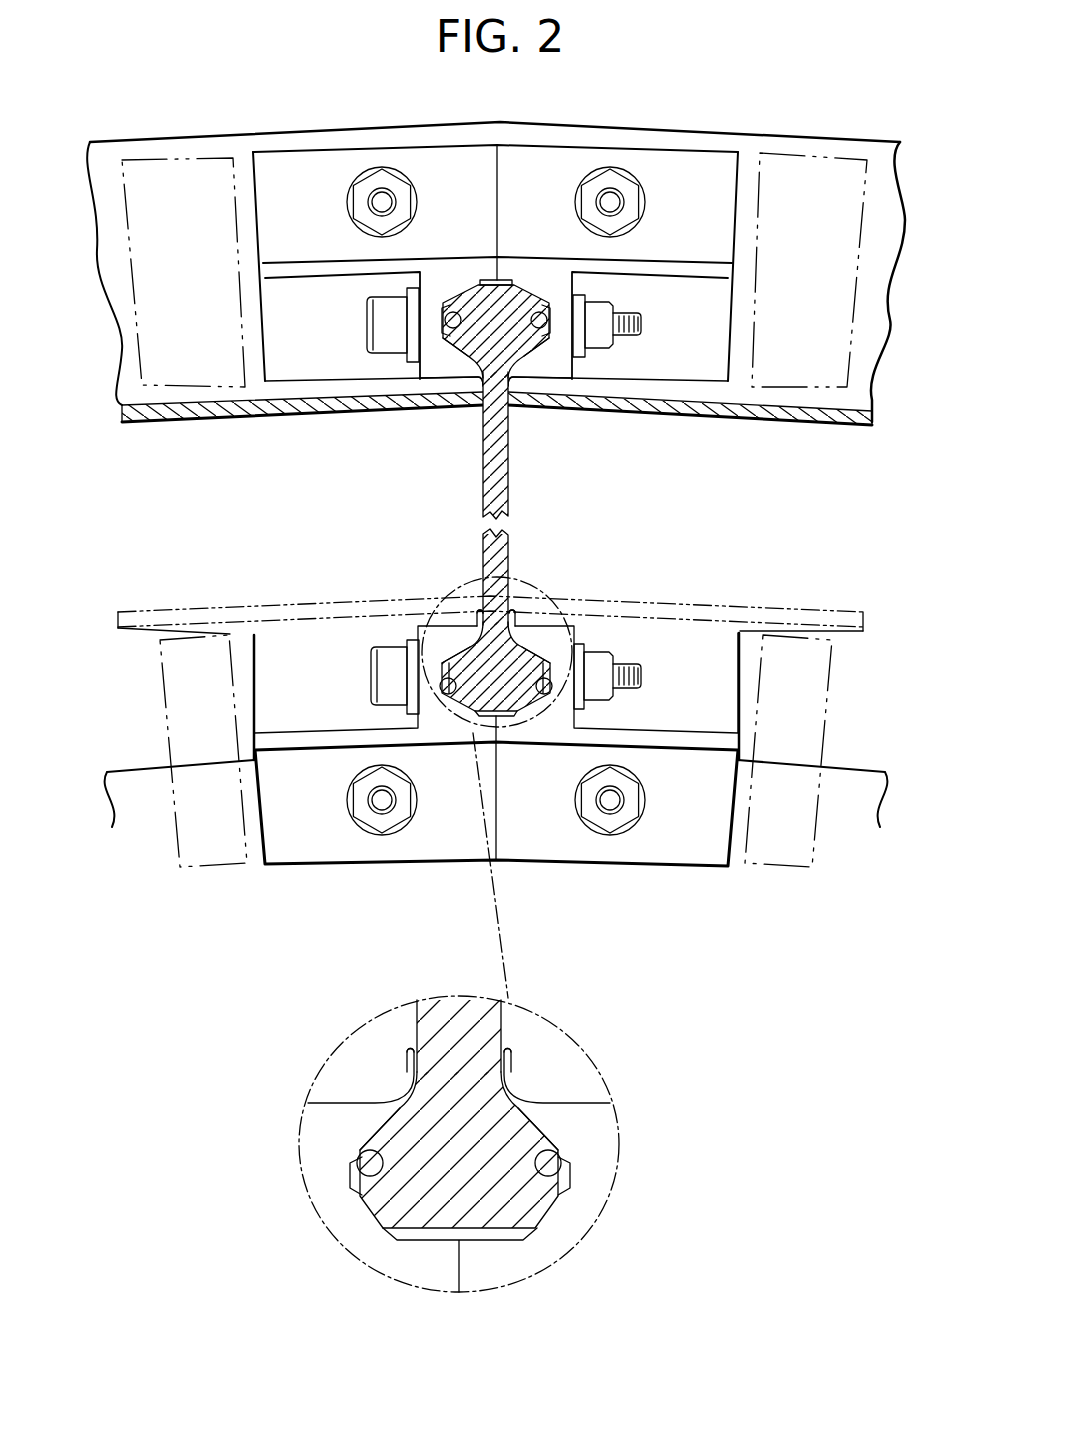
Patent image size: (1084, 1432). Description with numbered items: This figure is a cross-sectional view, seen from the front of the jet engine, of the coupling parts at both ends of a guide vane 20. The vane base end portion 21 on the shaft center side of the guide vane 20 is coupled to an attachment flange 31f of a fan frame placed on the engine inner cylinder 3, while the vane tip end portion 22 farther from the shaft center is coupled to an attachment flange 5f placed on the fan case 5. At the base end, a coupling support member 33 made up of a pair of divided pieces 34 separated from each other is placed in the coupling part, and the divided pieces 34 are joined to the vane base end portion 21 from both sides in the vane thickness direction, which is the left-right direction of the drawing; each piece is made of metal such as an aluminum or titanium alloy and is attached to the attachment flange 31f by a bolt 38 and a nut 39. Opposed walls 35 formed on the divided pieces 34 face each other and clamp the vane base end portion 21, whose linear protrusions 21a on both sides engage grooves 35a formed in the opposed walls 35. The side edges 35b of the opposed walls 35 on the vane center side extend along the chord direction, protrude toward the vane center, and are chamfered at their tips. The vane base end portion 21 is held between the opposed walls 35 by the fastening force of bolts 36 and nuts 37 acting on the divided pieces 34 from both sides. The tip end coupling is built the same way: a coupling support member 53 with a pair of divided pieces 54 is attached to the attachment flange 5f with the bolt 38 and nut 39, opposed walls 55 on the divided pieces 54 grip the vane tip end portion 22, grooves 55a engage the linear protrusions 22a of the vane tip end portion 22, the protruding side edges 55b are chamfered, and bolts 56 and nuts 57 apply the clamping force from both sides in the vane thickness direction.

The engine inner cylinder 3 is at (310, 599).
The fan case 5 is at (776, 412).
The attachment flange 5f is at (265, 130).
The guide vane 20 is at (510, 493).
The vane base end portion 21 is at (496, 648).
The linear protrusions 21a is at (455, 680).
The vane tip end portion 22 is at (512, 372).
The linear protrusions 22a is at (455, 326).
The attachment flange 31f is at (797, 762).
The coupling support member 33 is at (208, 868).
The divided pieces 34 is at (452, 850).
The opposed walls 35 is at (440, 715).
The grooves 35a is at (448, 694).
The side edges 35b is at (477, 622).
The bolts 36 is at (381, 671).
The nuts 37 is at (604, 662).
The bolt 38 is at (385, 199).
The nut 39 is at (367, 187).
The coupling support member 53 is at (148, 158).
The divided pieces 54 is at (470, 160).
The opposed walls 55 is at (438, 285).
The grooves 55a is at (440, 307).
The side edges 55b is at (478, 383).
The bolts 56 is at (384, 346).
The nuts 57 is at (606, 343).